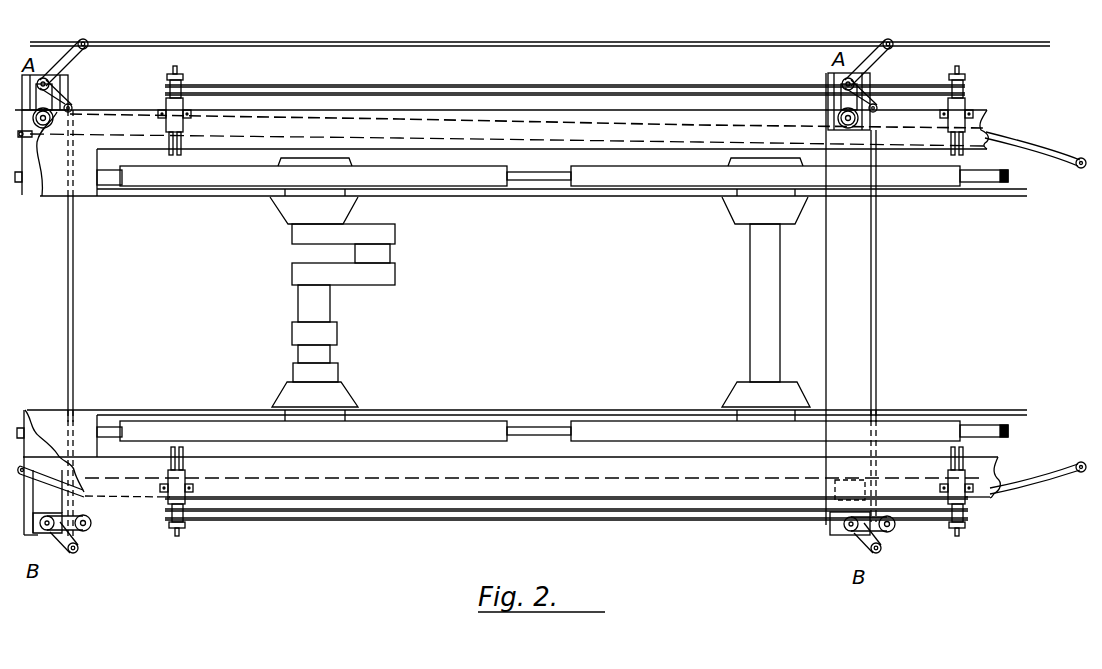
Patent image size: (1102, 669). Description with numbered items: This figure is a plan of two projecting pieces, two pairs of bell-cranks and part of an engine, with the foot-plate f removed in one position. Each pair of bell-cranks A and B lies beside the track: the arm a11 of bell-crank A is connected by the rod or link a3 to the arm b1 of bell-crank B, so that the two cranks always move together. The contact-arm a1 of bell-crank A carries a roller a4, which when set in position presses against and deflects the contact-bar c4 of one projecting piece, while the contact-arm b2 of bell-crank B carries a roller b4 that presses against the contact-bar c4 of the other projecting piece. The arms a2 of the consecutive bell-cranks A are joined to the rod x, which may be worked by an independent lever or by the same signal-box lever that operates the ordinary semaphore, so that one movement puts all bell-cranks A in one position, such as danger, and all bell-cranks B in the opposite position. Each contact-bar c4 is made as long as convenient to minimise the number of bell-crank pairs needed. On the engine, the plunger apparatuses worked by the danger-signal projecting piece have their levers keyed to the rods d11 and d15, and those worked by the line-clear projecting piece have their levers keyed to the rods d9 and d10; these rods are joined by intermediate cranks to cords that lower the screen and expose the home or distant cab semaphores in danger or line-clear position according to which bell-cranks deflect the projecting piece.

The rod x is at (432, 44).
The contact-arm a1 is at (42, 103).
The arm a2 is at (72, 61).
The arm a11 is at (58, 97).
The roller a4 is at (47, 123).
The rod or link a3 is at (76, 262).
The rod d11 is at (297, 94).
The rod d15 is at (372, 86).
The contact-bar c4 is at (662, 124).
The foot-plate f is at (425, 123).
The rod d9 is at (407, 511).
The rod d10 is at (461, 520).
The arm b1 is at (62, 545).
The contact-arm b2 is at (80, 540).
The roller b4 is at (92, 523).